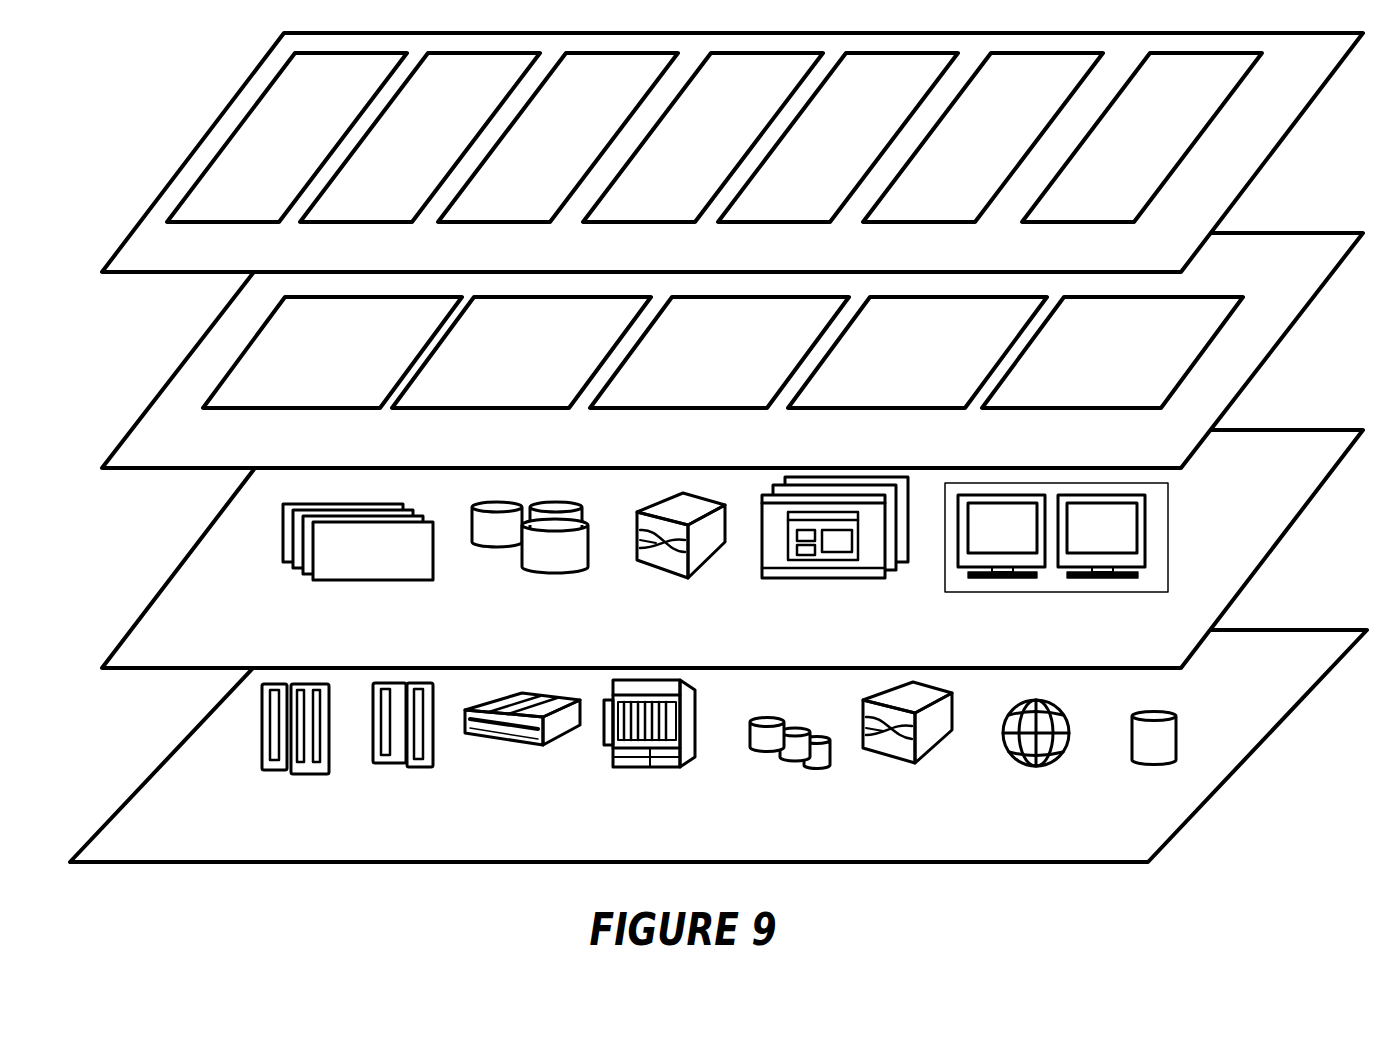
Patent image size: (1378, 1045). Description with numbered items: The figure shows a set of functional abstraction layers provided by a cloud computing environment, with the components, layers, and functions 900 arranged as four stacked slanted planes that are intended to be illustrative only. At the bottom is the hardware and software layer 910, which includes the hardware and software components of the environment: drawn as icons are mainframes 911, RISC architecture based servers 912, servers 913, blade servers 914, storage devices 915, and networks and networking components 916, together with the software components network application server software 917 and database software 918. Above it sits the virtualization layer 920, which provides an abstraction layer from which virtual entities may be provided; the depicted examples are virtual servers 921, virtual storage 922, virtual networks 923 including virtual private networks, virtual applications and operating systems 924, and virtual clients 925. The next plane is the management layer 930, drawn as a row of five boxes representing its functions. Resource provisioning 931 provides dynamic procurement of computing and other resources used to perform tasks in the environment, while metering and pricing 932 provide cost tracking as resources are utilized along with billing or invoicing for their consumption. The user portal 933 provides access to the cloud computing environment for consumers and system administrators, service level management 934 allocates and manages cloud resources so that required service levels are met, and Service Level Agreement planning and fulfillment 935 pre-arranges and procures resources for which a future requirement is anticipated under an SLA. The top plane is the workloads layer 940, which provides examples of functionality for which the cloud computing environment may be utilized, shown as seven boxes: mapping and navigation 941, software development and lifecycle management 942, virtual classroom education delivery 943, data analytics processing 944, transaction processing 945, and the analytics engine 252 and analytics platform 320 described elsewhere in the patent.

The components, layers, and functions 900 is at (718, 480).
The hardware and software layer 910 is at (167, 863).
The mainframes 911 is at (295, 775).
The RISC architecture based servers 912 is at (418, 767).
The servers 913 is at (528, 746).
The blade servers 914 is at (655, 768).
The storage devices 915 is at (784, 752).
The networks and networking components 916 is at (908, 764).
The network application server software 917 is at (1037, 767).
The database software 918 is at (1155, 764).
The virtualization layer 920 is at (166, 670).
The virtual servers 921 is at (380, 581).
The virtual storage 922 is at (565, 568).
The virtual networks 923 is at (690, 579).
The virtual applications and operating systems 924 is at (833, 579).
The virtual clients 925 is at (1062, 593).
The management layer 930 is at (166, 470).
The resource provisioning 931 is at (329, 367).
The metering and pricing 932 is at (518, 367).
The user portal 933 is at (714, 367).
The service level management 934 is at (912, 367).
The Service Level Agreement (SLA) planning and fulfillment 935 is at (1108, 367).
The workloads layer 940 is at (166, 274).
The mapping and navigation 941 is at (272, 147).
The software development and lifecycle management 942 is at (405, 147).
The virtual classroom education delivery 943 is at (543, 147).
The data analytics processing 944 is at (688, 147).
The transaction processing 945 is at (823, 147).
The analytics engine 252 is at (968, 147).
The analytics platform 320 is at (1127, 147).